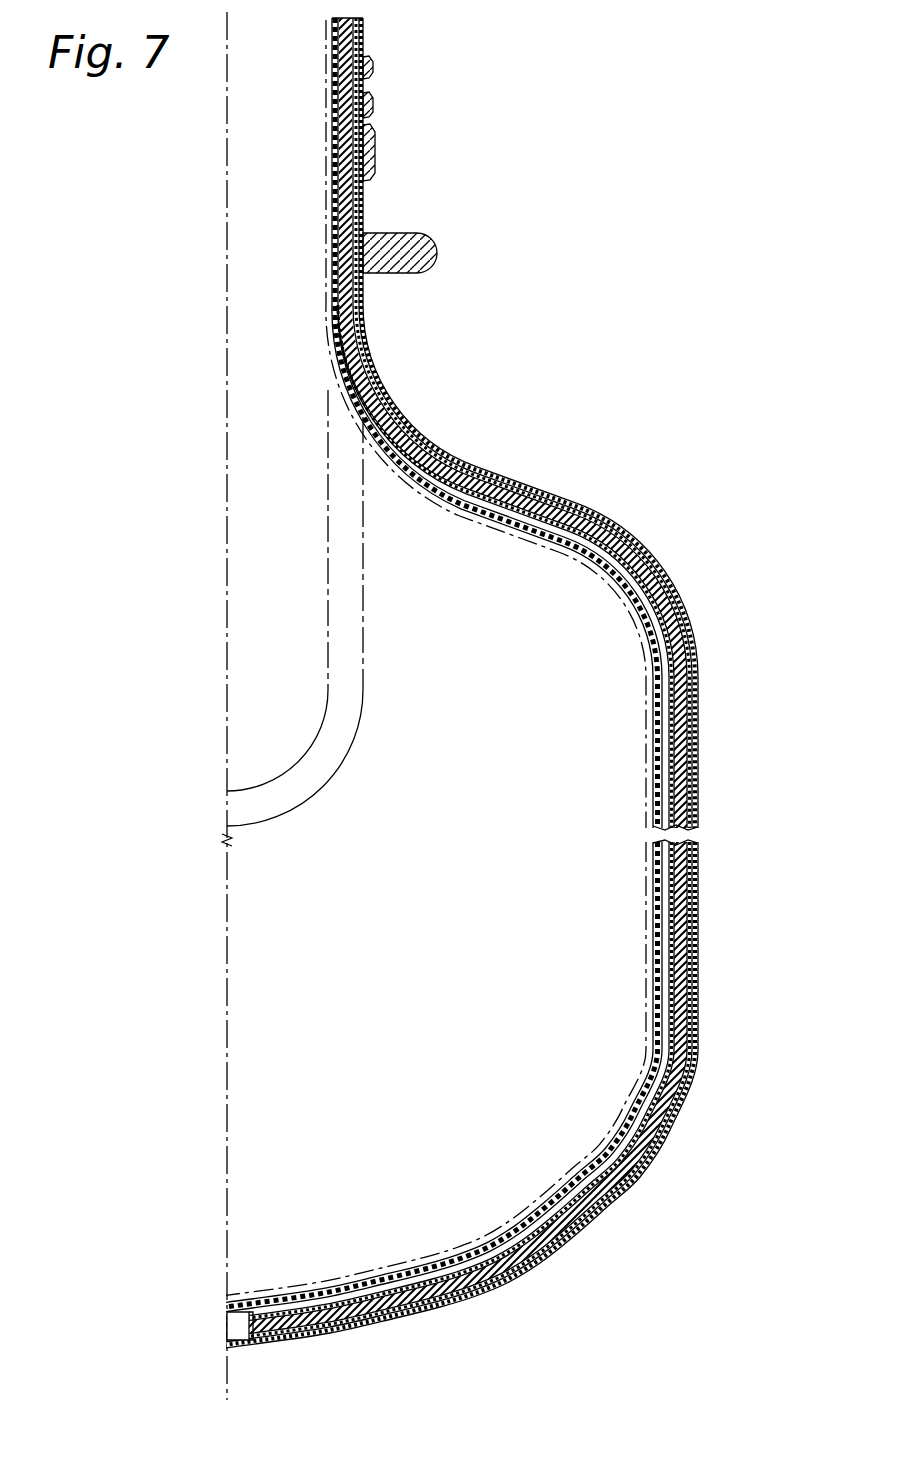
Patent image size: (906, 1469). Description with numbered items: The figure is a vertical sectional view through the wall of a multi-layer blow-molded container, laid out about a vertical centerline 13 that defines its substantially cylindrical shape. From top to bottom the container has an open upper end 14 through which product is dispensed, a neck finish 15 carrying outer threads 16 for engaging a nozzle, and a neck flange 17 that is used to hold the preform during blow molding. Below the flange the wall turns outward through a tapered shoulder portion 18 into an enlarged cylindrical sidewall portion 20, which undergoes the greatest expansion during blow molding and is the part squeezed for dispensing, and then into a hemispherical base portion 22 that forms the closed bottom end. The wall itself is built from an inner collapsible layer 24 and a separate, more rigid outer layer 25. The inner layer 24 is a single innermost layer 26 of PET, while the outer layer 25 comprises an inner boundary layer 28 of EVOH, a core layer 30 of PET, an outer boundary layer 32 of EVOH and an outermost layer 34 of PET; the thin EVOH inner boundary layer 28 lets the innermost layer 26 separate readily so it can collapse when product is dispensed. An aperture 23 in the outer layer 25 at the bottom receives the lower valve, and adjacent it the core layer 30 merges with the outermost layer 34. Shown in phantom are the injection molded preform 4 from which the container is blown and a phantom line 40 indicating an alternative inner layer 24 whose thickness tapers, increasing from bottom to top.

The preform 4 is at (363, 590).
The vertical centerline 13 is at (227, 714).
The open upper end 14 is at (334, 15).
The neck finish 15 is at (376, 131).
The outer threads 16 is at (373, 67).
The neck flange 17 is at (437, 252).
The shoulder portion 18 is at (508, 472).
The sidewall portion 20 is at (700, 672).
The base portion 22 is at (554, 1252).
The aperture 23 is at (246, 1346).
The inner collapsible layer 24 is at (652, 906).
The outer layer 25 is at (754, 837).
The innermost layer 26 is at (651, 924).
The inner boundary layer 28 is at (688, 928).
The core layer 30 is at (685, 901).
The outer boundary layer 32 is at (697, 873).
The outermost layer 34 is at (700, 861).
The phantom line 40 is at (646, 1013).